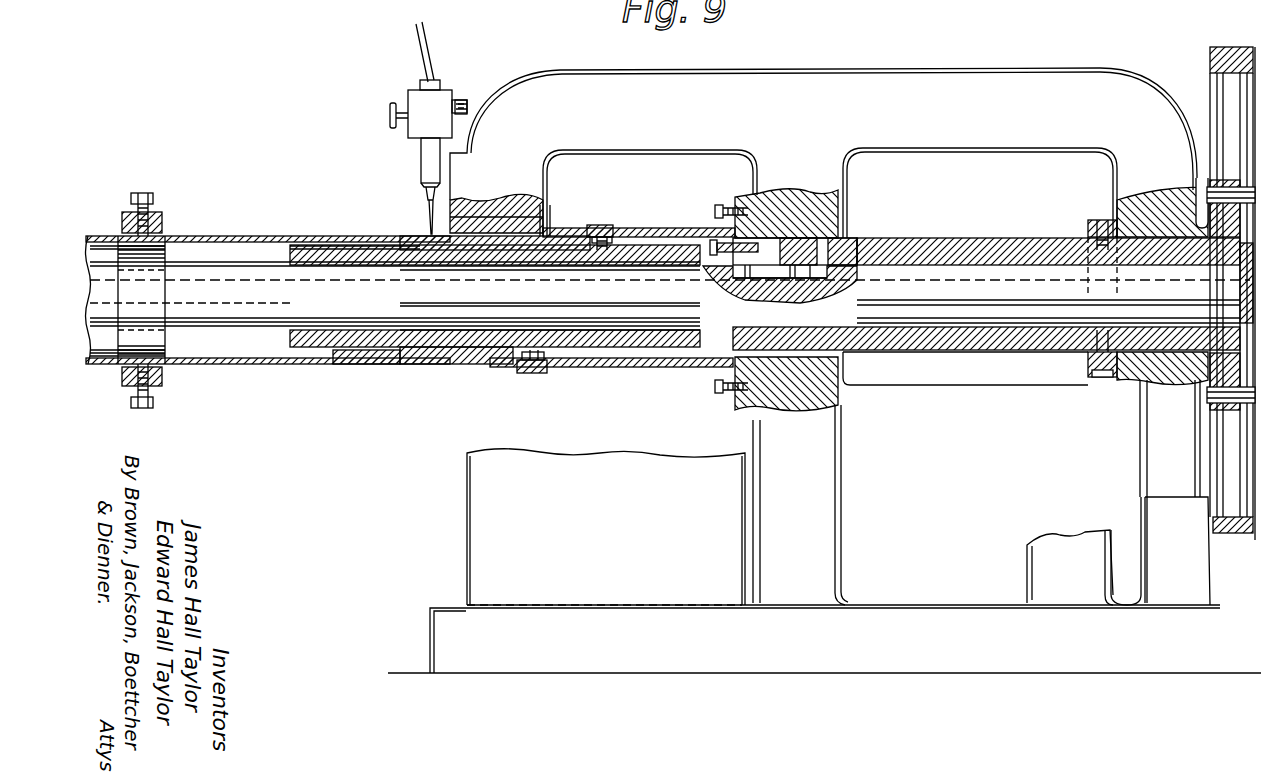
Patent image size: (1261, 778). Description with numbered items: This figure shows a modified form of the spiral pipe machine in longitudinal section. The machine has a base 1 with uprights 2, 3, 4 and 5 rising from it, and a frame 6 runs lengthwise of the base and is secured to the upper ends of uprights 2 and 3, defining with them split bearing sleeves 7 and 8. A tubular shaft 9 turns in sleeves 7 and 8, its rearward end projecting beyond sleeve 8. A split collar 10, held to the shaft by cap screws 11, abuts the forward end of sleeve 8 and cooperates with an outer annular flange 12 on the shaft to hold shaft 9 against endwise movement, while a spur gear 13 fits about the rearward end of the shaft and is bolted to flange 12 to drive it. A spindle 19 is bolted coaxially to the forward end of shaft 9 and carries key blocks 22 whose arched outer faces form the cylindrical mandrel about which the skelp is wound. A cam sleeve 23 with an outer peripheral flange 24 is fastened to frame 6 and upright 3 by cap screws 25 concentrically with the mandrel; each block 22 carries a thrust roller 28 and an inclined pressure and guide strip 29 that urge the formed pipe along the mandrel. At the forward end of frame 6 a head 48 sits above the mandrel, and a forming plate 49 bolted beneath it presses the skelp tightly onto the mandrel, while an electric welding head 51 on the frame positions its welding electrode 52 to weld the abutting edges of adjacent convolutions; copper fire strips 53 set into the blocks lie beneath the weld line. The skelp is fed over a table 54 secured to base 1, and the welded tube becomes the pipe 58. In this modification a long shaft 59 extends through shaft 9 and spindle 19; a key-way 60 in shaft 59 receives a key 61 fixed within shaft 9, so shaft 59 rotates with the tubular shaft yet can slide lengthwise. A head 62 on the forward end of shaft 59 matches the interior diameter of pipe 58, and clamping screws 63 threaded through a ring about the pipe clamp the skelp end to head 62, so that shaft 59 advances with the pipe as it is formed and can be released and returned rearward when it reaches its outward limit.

The base 1 is at (430, 608).
The upright 2 is at (1157, 438).
The upright 3 is at (820, 516).
The upright 4 is at (1078, 541).
The upright 5 is at (1162, 508).
The frame 6 is at (830, 62).
The split bearing sleeve 7 is at (842, 206).
The split bearing sleeve 8 is at (1122, 208).
The tubular shaft 9 is at (962, 250).
The split collar 10 is at (1088, 228).
The cap screws 11 is at (1100, 379).
The outer annular flange 12 is at (1197, 188).
The spur gear 13 is at (1212, 70).
The spindle 19 is at (320, 346).
The key blocks 22 is at (480, 234).
The cam sleeve 23 is at (660, 230).
The outer peripheral flange 24 is at (740, 197).
The cap screws 25 is at (718, 206).
The thrust roller 28 is at (612, 226).
The pressure and guide strip 29 is at (593, 229).
The head 48 is at (548, 206).
The forming plate 49 is at (545, 227).
The electric welding head 51 is at (428, 153).
The welding electrode 52 is at (422, 214).
The fire strip 53 is at (415, 238).
The table 54 is at (475, 490).
The pipe 58 is at (232, 215).
The shaft 59 is at (240, 320).
The key-way 60 is at (872, 270).
The key 61 is at (846, 241).
The head 62 is at (162, 214).
The clamping screws 63 is at (144, 408).